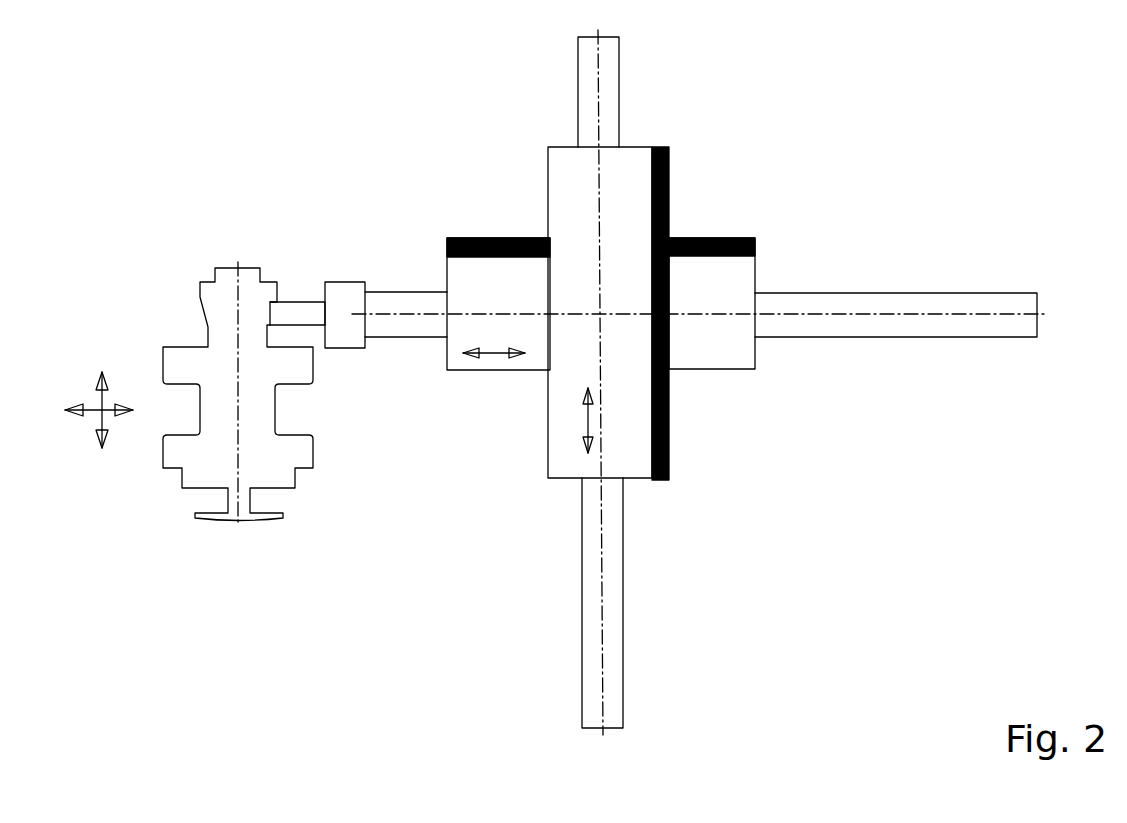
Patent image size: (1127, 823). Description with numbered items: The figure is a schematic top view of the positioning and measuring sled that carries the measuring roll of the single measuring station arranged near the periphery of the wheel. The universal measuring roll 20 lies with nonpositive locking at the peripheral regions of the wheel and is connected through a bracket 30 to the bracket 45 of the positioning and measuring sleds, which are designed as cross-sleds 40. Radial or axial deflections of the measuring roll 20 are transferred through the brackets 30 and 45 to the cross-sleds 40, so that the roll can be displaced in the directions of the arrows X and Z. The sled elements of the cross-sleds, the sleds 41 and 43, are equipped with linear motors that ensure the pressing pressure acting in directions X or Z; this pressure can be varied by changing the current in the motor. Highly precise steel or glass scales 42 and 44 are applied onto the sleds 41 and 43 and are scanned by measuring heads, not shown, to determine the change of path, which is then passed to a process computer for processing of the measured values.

The universal measuring roll 20 is at (198, 463).
The bracket 30 is at (304, 310).
The cross-sleds 40 is at (513, 170).
The sled equipped with linear motor 41 is at (574, 372).
The steel or glass scale 42 is at (668, 155).
The sled equipped with linear motor 43 is at (720, 349).
The steel or glass scale 44 is at (896, 235).
The bracket 45 is at (410, 303).